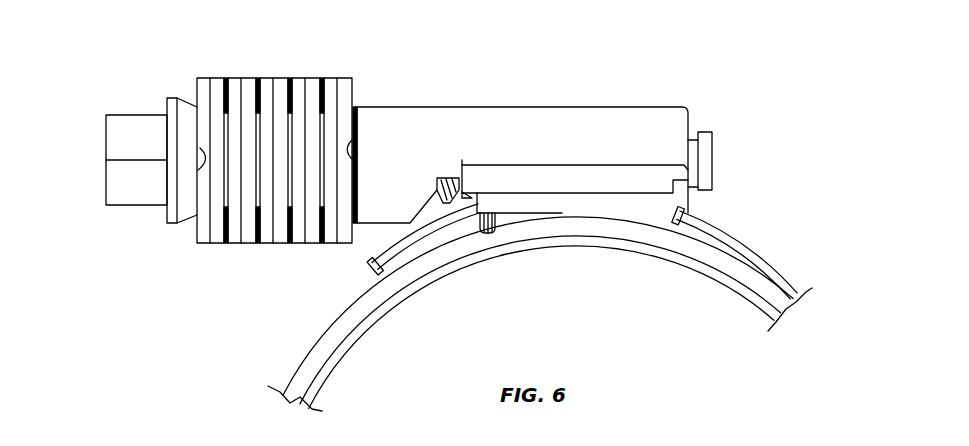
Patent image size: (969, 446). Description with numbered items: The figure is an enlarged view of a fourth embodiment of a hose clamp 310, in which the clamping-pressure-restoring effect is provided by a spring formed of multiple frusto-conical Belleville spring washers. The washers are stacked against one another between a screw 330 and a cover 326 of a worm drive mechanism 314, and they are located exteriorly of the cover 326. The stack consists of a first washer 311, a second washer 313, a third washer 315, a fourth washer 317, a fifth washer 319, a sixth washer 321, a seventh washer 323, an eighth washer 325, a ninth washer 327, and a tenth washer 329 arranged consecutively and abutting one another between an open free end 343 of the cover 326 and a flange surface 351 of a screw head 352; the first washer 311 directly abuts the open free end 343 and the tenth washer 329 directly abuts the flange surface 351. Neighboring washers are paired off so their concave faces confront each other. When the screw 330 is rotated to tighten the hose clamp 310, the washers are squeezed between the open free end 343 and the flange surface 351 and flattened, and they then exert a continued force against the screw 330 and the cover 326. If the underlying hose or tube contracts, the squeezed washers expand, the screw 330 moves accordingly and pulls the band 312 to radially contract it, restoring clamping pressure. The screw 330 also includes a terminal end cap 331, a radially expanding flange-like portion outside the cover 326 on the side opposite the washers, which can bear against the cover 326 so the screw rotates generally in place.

The hose clamp 310 is at (135, 38).
The first washer 311 is at (346, 82).
The band 312 is at (742, 250).
The second washer 313 is at (333, 245).
The worm drive mechanism 314 is at (606, 105).
The third washer 315 is at (317, 82).
The fourth washer 317 is at (298, 245).
The fifth washer 319 is at (280, 82).
The sixth washer 321 is at (267, 245).
The seventh washer 323 is at (248, 82).
The eighth washer 325 is at (233, 245).
The cover 326 is at (476, 108).
The ninth washer 327 is at (216, 82).
The tenth washer 329 is at (201, 230).
The screw 330 is at (120, 207).
The terminal end cap 331 is at (708, 152).
The open free end 343 is at (357, 148).
The flange surface 351 is at (200, 168).
The screw head 352 is at (127, 130).